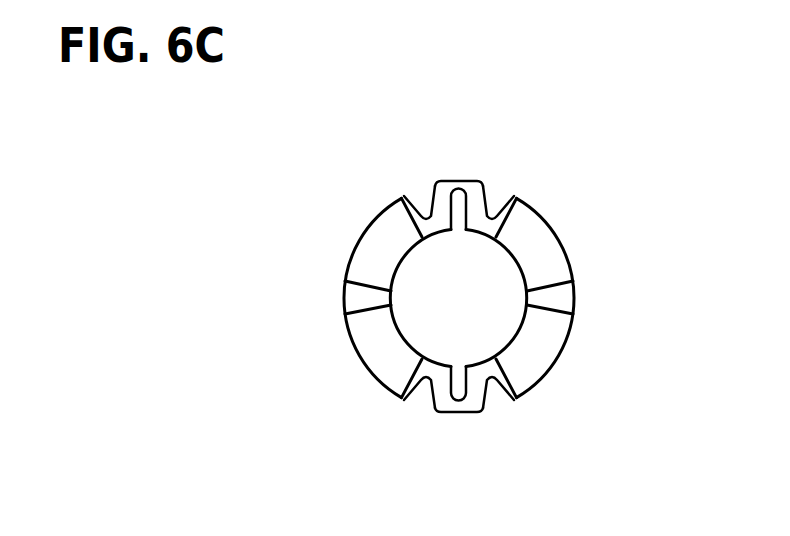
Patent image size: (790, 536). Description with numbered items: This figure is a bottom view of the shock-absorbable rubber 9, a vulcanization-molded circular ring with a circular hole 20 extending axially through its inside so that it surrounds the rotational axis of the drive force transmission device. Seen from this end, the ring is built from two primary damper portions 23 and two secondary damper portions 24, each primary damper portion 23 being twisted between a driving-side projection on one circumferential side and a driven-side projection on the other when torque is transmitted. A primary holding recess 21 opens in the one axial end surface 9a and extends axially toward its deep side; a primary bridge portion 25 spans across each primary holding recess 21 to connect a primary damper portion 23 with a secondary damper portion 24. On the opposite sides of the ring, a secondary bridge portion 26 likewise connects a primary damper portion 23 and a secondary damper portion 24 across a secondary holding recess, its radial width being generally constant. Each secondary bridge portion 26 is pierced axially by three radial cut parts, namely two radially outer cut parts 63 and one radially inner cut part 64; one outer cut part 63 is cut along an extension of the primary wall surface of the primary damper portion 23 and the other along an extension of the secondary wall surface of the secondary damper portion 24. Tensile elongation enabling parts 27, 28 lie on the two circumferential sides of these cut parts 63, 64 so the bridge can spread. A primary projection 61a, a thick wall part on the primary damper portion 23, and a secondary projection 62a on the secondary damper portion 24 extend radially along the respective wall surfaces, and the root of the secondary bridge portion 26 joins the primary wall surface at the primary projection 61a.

The shock-absorbable rubber 9 is at (305, 228).
The one axial end surface 9a is at (372, 240).
The circular hole 20 is at (500, 272).
The primary holding recess 21 is at (352, 290).
The primary damper portion 23 is at (533, 222).
The secondary damper portion 24 is at (375, 213).
The primary bridge portion 25 is at (344, 307).
The secondary bridge portion 26 is at (568, 131).
The tensile elongation enabling part 27 is at (426, 212).
The tensile elongation enabling part 28 is at (457, 181).
The primary projection 61a is at (411, 396).
The secondary projection 62a is at (510, 395).
The radially outer cut part 63 is at (428, 378).
The radially inner cut part 64 is at (460, 368).